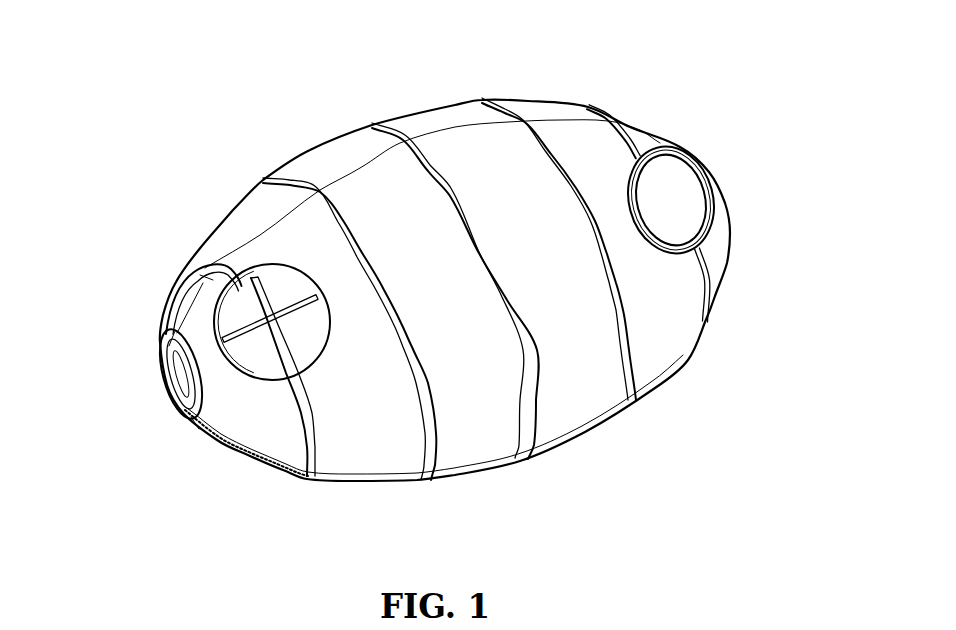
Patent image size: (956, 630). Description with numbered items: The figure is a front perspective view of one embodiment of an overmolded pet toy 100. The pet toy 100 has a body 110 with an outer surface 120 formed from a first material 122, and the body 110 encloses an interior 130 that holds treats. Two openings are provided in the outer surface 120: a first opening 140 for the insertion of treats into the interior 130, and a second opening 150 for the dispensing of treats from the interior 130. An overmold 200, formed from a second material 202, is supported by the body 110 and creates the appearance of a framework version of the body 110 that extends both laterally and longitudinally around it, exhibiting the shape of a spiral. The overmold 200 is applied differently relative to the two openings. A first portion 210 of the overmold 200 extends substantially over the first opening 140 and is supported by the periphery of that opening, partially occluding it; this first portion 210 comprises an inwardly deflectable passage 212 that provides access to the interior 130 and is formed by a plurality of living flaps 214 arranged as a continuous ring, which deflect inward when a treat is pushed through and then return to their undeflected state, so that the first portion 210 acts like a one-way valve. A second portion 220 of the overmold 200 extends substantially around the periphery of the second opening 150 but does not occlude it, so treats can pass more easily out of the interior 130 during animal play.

The pet toy 100 is at (160, 97).
The body 110 is at (660, 327).
The outer surface 120 is at (475, 147).
The first material 122 is at (560, 400).
The interior 130 is at (680, 207).
The first opening 140 is at (213, 280).
The second opening 150 is at (713, 140).
The overmold 200 is at (413, 487).
The second material 202 is at (434, 415).
The first portion of the overmold 210 is at (280, 277).
The inwardly deflectable passage 212 is at (257, 310).
The living flaps 214 is at (300, 347).
The second portion of the overmold 220 is at (635, 147).